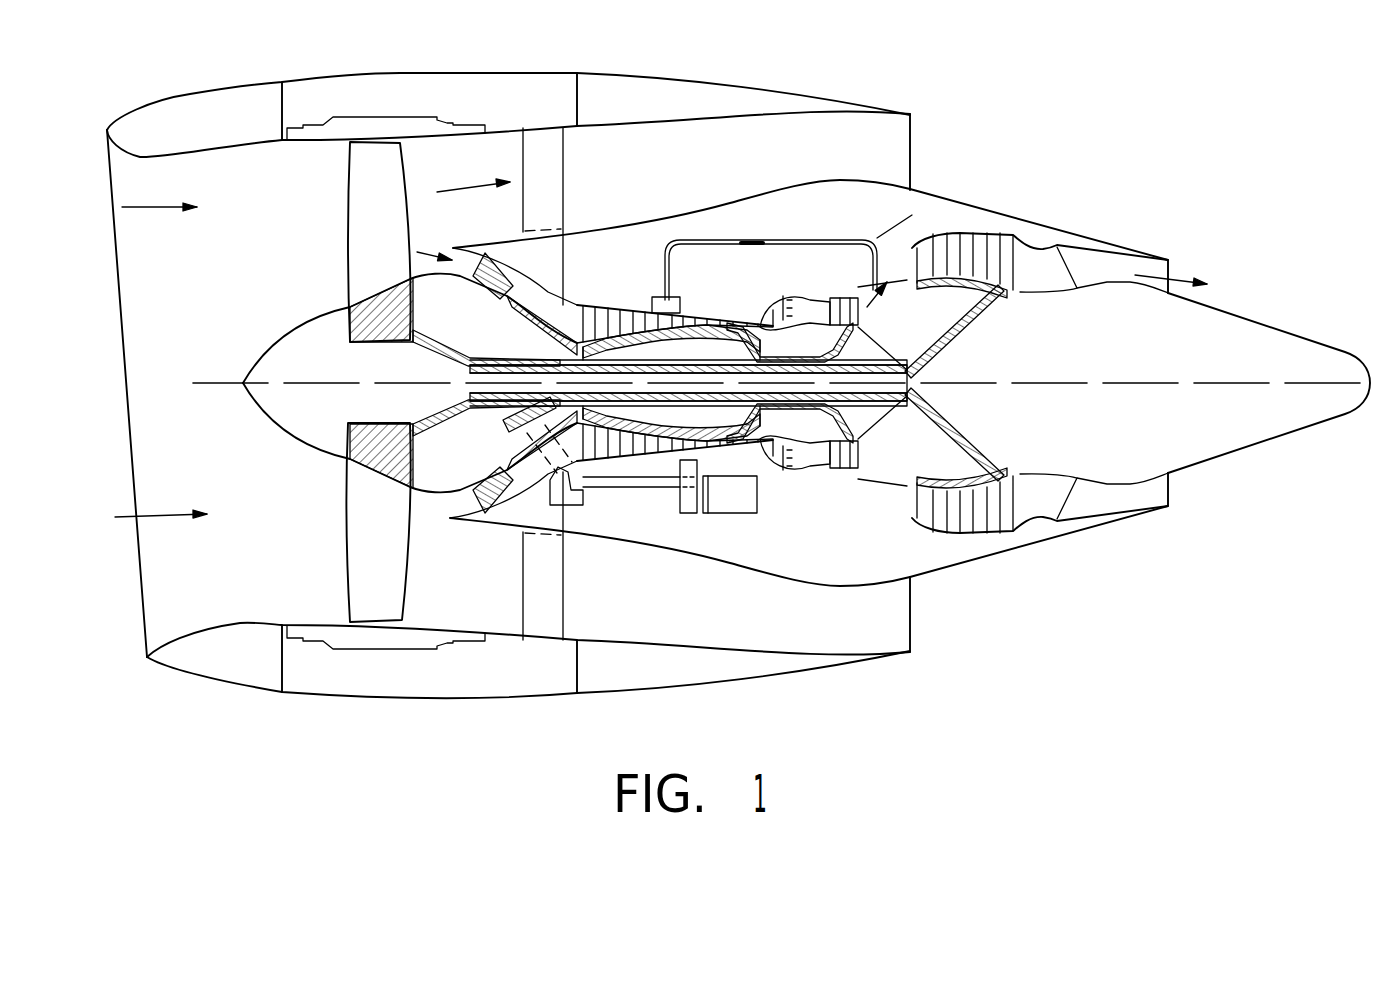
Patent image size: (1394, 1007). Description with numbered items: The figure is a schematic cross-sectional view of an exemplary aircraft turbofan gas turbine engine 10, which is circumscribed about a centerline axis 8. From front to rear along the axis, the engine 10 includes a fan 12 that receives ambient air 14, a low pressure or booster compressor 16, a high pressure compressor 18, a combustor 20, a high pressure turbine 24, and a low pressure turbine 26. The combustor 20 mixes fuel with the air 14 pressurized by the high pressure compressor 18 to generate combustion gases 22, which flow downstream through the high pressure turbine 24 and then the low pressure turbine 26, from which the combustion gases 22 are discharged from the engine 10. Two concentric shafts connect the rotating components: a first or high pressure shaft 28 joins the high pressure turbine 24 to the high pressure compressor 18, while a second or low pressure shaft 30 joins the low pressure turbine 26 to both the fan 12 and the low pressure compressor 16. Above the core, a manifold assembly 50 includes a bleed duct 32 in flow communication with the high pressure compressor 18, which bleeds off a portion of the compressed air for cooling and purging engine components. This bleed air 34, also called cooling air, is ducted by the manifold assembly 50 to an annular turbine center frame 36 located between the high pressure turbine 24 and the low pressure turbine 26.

The centerline axis 8 is at (1063, 382).
The turbofan gas turbine engine 10 is at (973, 132).
The fan 12 is at (339, 299).
The ambient air 14 is at (143, 208).
The low pressure or booster compressor 16 is at (516, 288).
The high pressure compressor (HPC) 18 is at (590, 304).
The combustor 20 is at (803, 297).
The combustion gases 22 is at (874, 303).
The high pressure turbine (HPT) 24 is at (838, 293).
The low pressure turbine (LPT) 26 is at (980, 233).
The high pressure shaft 28 is at (812, 412).
The low pressure shaft 30 is at (888, 413).
The bleed duct 32 is at (740, 240).
The bleed air 34 is at (768, 240).
The turbine center frame 36 is at (917, 233).
The manifold assembly 50 is at (890, 247).